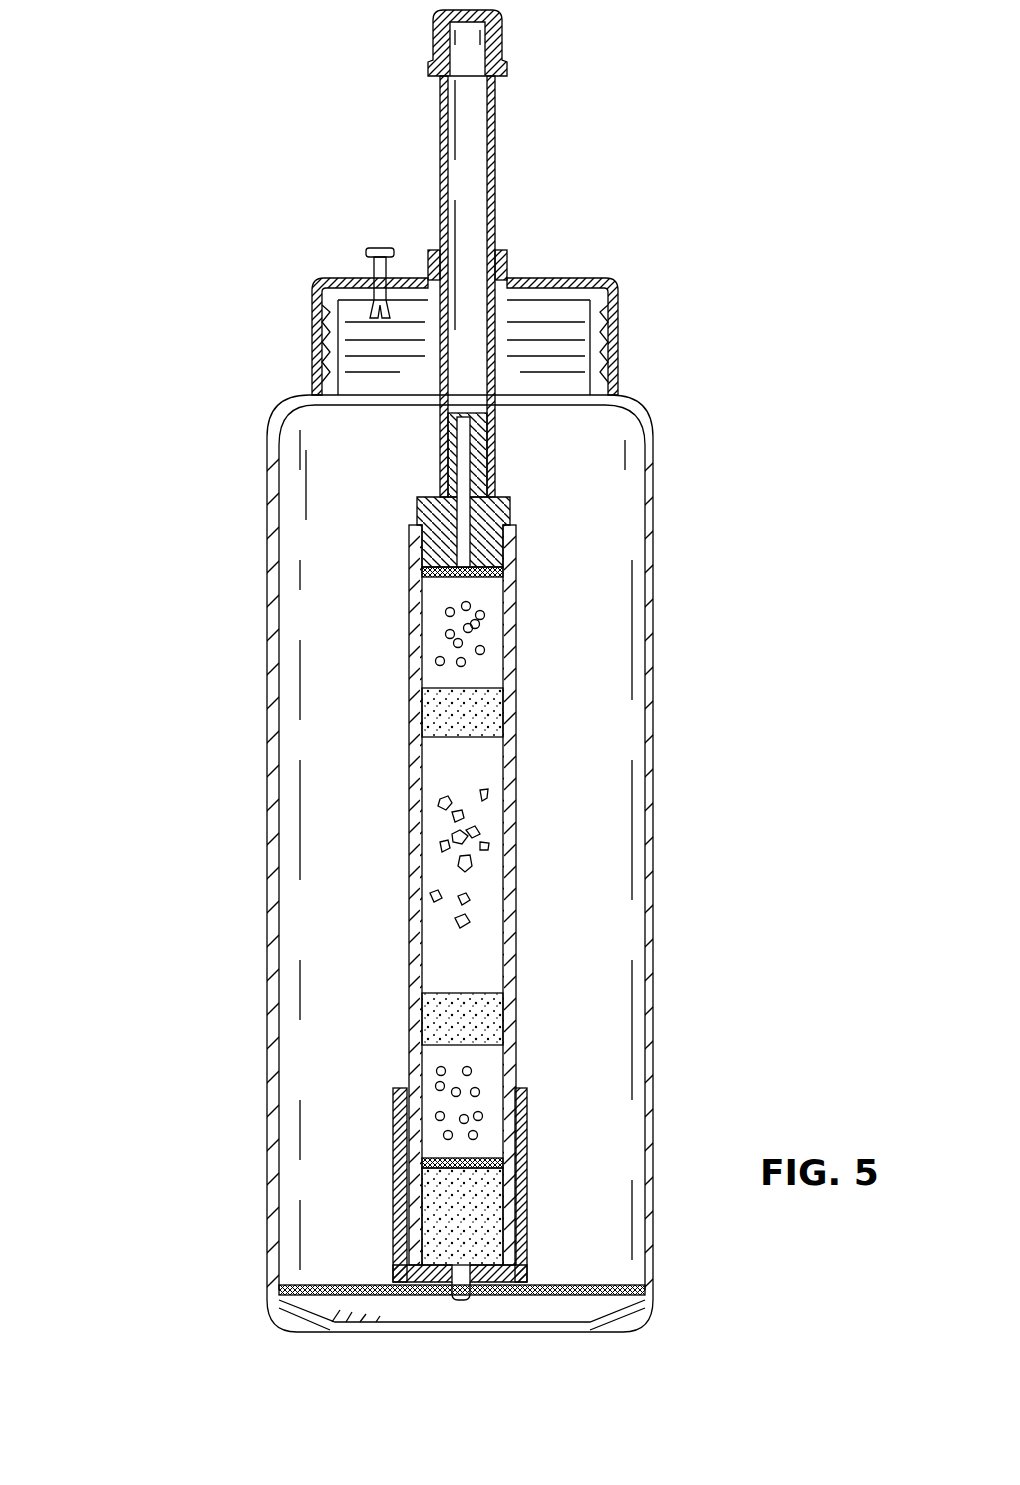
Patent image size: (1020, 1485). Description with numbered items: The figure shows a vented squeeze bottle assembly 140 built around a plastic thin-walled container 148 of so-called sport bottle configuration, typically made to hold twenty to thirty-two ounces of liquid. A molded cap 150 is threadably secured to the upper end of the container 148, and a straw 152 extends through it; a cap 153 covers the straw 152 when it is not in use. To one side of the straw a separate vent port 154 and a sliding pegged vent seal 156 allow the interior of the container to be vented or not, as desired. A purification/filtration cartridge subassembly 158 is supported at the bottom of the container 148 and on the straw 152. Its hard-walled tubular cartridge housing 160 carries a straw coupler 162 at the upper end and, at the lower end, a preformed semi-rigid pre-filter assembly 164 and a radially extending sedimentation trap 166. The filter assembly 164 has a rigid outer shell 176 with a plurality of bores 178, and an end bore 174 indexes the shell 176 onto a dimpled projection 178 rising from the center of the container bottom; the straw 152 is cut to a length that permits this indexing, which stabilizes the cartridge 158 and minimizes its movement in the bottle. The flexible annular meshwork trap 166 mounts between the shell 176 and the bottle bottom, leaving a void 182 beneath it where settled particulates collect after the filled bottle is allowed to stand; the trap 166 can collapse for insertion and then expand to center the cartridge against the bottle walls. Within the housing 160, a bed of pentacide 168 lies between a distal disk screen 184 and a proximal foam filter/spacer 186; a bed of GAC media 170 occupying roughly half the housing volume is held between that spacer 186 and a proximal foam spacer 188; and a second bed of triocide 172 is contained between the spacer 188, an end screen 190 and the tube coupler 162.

The dispensing container assembly 140 is at (163, 565).
The container 148 is at (657, 778).
The cap 150 is at (620, 303).
The straw 152 is at (490, 212).
The cap 153 is at (505, 50).
The vent port 154 is at (372, 264).
The vent seal 156 is at (386, 247).
The purification/filtration cartridge subassembly 158 is at (407, 828).
The cartridge housing 160 is at (517, 927).
The straw coupler 162 is at (425, 496).
The pre-filter assembly 164 is at (529, 1134).
The sedimentation trap 166 is at (610, 1285).
The bed of pentacide 168 is at (472, 1080).
The GAC media 170 is at (492, 846).
The bed of triocide 172 is at (482, 638).
The end bore 174 is at (440, 1268).
The outer shell 176 is at (400, 1150).
The dimpled projection 178 is at (526, 1186).
The void 182 is at (285, 1306).
The distal disk screen 184 is at (410, 1166).
The proximal foam filter/spacer 186 is at (517, 1006).
The proximal foam spacer 188 is at (420, 714).
The end screen 190 is at (512, 572).